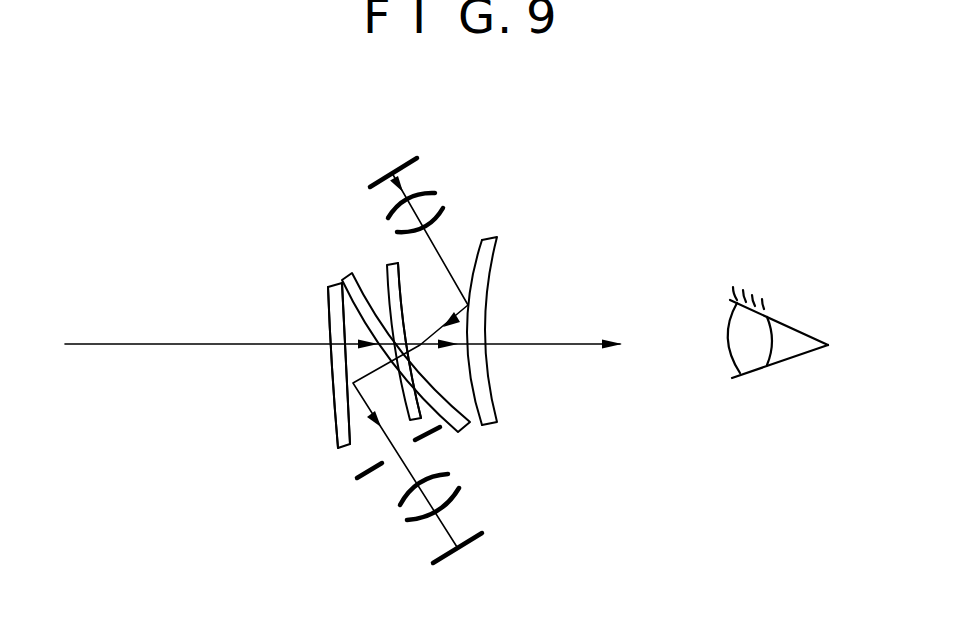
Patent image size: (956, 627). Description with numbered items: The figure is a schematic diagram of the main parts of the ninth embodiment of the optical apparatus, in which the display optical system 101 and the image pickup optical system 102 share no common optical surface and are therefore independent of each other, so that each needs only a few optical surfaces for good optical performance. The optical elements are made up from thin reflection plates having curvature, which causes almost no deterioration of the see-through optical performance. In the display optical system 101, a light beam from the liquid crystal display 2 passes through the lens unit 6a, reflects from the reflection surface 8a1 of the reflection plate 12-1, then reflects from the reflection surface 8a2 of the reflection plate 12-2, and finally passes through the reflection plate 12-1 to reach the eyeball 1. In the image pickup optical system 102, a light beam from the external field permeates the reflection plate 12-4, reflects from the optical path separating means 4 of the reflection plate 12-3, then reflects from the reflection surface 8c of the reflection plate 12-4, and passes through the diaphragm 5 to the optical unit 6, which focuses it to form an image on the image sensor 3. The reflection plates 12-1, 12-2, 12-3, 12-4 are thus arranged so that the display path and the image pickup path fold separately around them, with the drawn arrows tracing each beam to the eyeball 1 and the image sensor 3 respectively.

The eyeball 1 is at (777, 367).
The liquid crystal display 2 is at (408, 157).
The image sensor 3 is at (483, 534).
The optical path separating means 4 is at (333, 323).
The diaphragm 5 is at (357, 478).
The optical unit 6 is at (407, 513).
The lens unit 6a is at (436, 203).
The reflection surface 8a1 is at (473, 388).
The reflection surface 8a2 is at (405, 300).
The reflection surface 8c is at (347, 411).
The reflection plate 12-1 is at (528, 306).
The reflection plate 12-2 is at (443, 301).
The reflection plate 12-3 is at (343, 283).
The reflection plate 12-4 is at (302, 386).
The display optical system 101 is at (478, 213).
The image pickup optical system 102 is at (298, 366).